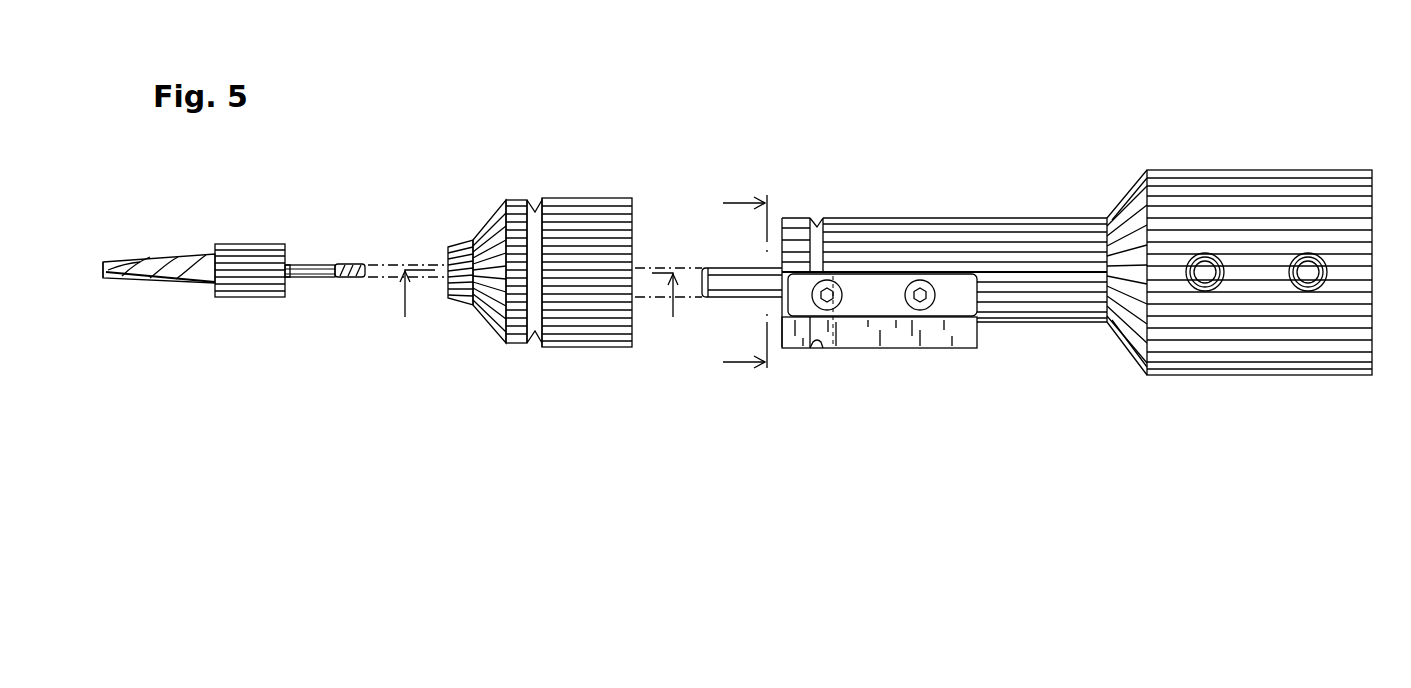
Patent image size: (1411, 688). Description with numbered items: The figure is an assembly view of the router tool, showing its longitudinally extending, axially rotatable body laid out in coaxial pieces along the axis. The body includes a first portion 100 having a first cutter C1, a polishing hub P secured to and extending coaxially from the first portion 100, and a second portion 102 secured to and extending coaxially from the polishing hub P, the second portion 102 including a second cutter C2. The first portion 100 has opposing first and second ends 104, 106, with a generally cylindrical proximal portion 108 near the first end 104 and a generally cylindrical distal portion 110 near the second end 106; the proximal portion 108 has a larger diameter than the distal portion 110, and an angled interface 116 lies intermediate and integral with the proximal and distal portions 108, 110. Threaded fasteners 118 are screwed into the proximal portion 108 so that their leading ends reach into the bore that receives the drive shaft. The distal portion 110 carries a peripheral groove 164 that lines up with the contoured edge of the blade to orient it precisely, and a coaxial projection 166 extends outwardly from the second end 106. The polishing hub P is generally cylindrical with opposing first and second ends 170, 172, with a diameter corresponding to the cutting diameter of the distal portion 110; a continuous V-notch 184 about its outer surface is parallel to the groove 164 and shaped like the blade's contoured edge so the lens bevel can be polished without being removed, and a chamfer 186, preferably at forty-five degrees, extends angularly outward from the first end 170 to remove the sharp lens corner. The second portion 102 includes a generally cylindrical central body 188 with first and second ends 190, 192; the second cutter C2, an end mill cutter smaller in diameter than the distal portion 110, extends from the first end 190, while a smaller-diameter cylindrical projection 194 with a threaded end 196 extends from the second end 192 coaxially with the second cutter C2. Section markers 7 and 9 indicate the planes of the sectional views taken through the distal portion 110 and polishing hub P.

The first portion 100 is at (1027, 188).
The second portion 102 is at (238, 220).
The first end 104 is at (1263, 228).
The second end 106 is at (896, 367).
The proximal portion 108 is at (1222, 178).
The distal portion 110 is at (945, 228).
The interface 116 is at (1120, 203).
The threaded fasteners 118 is at (1310, 275).
The groove 164 is at (817, 351).
The projection 166 is at (738, 268).
The first end 170 is at (448, 259).
The second end 172 is at (637, 210).
The V-notch 184 is at (535, 193).
The chamfer 186 is at (485, 326).
The central body 188 is at (262, 280).
The first end 190 is at (215, 257).
The second end 192 is at (291, 253).
The projection 194 is at (320, 278).
The threaded end 196 is at (352, 267).
The section line 7 is at (736, 282).
The section line 9 is at (539, 309).
The polishing hub P is at (553, 183).
The first cutter C1 is at (921, 363).
The second cutter C2 is at (152, 299).